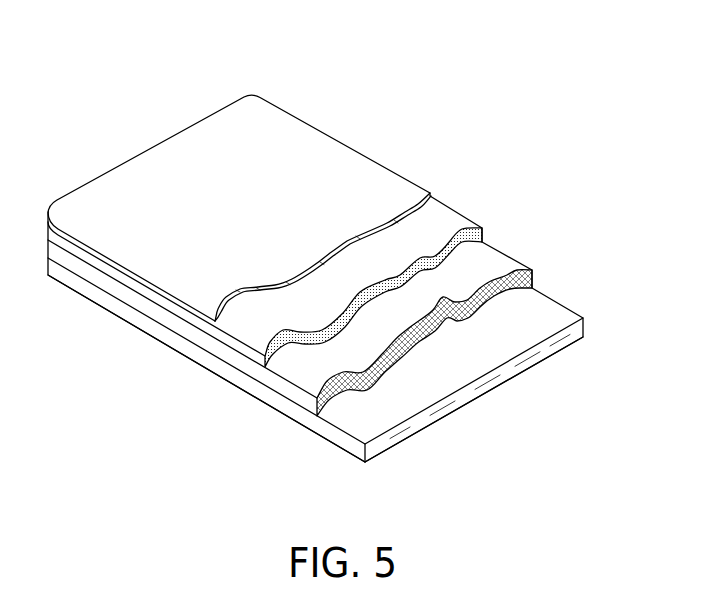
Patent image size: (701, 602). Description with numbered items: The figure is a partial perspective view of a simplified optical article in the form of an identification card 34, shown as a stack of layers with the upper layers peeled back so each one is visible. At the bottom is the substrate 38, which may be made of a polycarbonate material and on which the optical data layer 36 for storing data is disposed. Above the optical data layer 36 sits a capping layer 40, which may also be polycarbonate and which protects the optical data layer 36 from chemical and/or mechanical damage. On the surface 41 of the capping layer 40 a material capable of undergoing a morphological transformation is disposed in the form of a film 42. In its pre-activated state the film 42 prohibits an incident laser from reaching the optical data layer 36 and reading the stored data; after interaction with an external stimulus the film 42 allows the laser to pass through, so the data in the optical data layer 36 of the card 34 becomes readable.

The identification card 34 is at (280, 60).
The film 42 is at (363, 165).
The surface of the capping layer 41 is at (243, 327).
The capping layer 40 is at (445, 218).
The optical data layer 36 is at (502, 268).
The substrate 38 is at (557, 315).